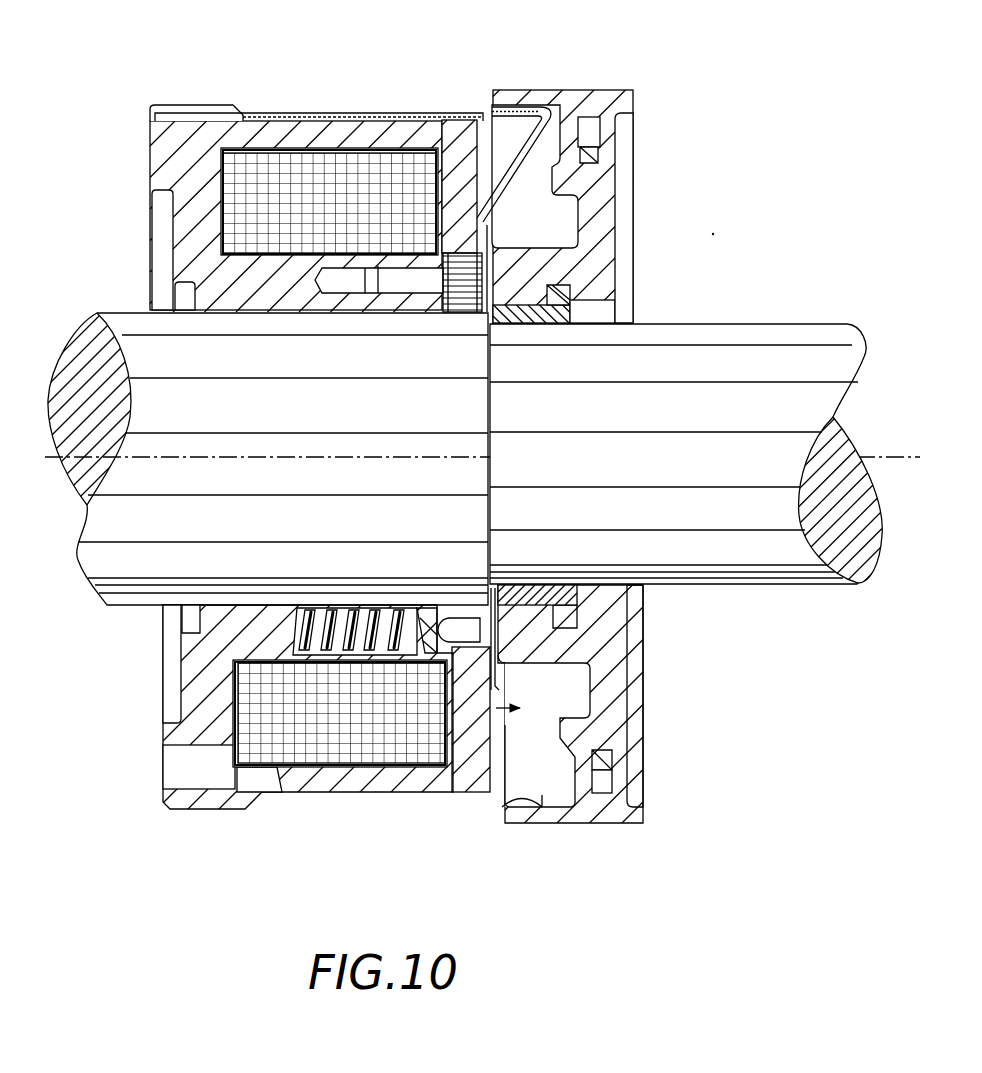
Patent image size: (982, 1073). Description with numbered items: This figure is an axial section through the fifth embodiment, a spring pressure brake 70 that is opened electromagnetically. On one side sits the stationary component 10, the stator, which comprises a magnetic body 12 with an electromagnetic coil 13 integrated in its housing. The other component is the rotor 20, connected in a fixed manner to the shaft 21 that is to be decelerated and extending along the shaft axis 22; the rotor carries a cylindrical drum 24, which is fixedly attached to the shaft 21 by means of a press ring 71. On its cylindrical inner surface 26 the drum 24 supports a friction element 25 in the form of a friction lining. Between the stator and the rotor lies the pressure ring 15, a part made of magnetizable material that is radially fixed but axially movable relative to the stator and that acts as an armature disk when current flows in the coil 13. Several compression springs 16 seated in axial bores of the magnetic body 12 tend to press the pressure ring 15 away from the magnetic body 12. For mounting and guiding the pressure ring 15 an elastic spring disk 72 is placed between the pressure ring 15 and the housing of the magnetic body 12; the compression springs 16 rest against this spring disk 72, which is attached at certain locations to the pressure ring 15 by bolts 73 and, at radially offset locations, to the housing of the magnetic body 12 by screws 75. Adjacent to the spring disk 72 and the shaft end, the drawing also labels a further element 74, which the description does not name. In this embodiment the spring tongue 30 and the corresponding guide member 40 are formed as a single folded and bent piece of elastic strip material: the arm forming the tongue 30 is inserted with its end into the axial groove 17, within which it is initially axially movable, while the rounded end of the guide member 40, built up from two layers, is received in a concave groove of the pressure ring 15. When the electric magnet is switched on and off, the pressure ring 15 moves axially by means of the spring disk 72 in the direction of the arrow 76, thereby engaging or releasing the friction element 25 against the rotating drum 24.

The stationary component 10 is at (141, 105).
The magnetic body 12 is at (348, 792).
The coil 13 is at (290, 738).
The pressure ring 15 is at (497, 766).
The compression springs 16 is at (312, 610).
The axial groove 17 is at (168, 107).
The rotor 20 is at (633, 87).
The shaft 21 is at (748, 520).
The shaft axis 22 is at (222, 457).
The cylindrical drum 24 is at (585, 822).
The friction element 25 is at (488, 106).
The cylindrical inner surface 26 is at (505, 797).
The spring tongue 30 is at (258, 112).
The guide member 40 is at (514, 175).
The spring pressure brake 70 is at (661, 127).
The press ring 71 is at (560, 600).
The spring disk 72 is at (426, 120).
The bolts 73 is at (463, 612).
The bearing 74 is at (483, 313).
The screws 75 is at (410, 285).
The arrow 76 is at (497, 708).